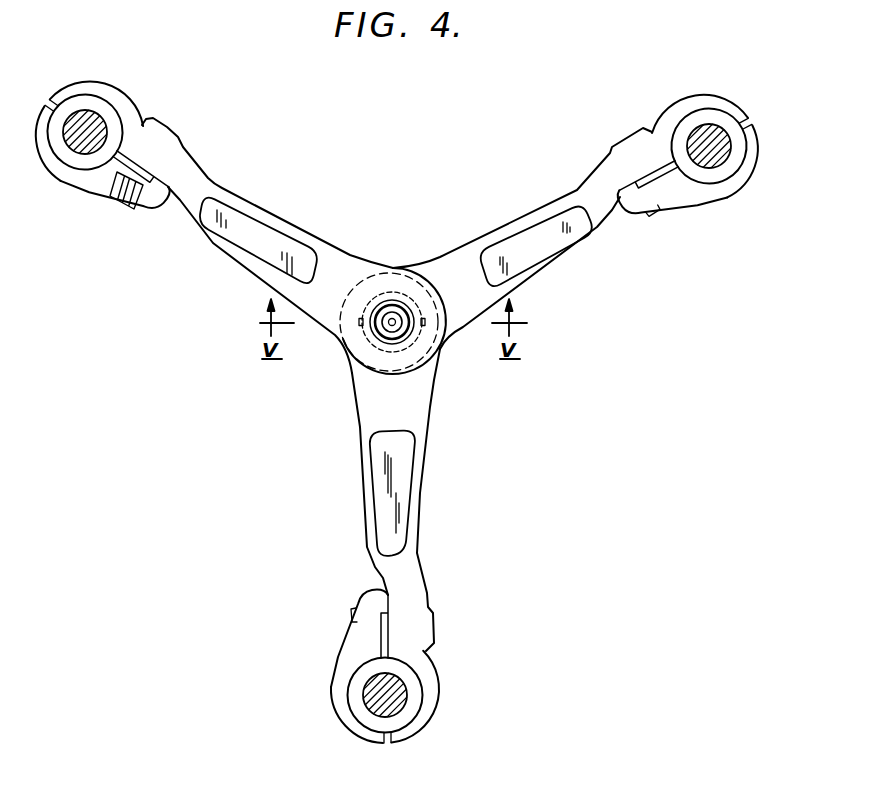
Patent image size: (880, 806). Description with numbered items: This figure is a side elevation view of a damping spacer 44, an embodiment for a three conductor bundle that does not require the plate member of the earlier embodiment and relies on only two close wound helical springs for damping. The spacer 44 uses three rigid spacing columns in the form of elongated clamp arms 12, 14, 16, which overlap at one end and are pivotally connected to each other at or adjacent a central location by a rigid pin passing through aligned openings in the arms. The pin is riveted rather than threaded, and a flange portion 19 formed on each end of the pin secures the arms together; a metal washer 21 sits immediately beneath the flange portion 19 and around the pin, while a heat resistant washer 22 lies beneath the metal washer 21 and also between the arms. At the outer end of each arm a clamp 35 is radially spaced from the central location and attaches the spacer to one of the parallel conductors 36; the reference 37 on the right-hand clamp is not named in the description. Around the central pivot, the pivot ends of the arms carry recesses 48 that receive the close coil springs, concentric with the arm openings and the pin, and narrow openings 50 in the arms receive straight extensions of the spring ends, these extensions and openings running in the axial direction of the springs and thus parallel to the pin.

The clamp arm 12 is at (283, 220).
The clamp arm 14 is at (421, 497).
The clamp arm 16 is at (515, 218).
The flange portion 19 is at (388, 336).
The metal washer 21 is at (401, 338).
The heat resistant washer 22 is at (396, 299).
The clamp 35 is at (120, 100).
The conductor 36 is at (85, 118).
The leg rod 37 is at (721, 121).
The damping spacer 44 is at (485, 422).
The recess 48 is at (430, 300).
The narrow opening 50 is at (346, 307).